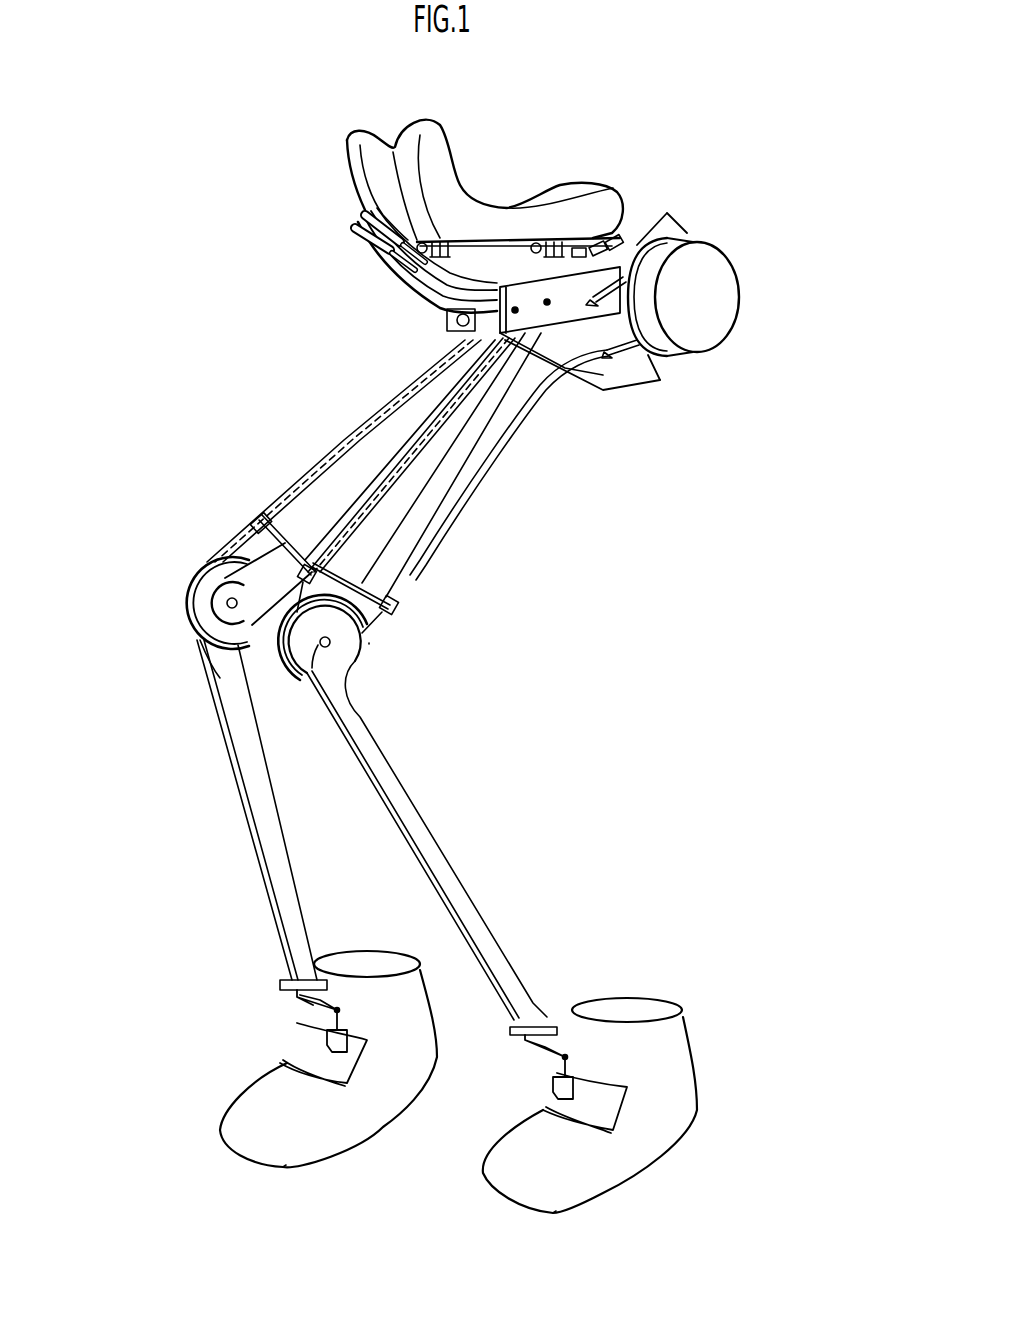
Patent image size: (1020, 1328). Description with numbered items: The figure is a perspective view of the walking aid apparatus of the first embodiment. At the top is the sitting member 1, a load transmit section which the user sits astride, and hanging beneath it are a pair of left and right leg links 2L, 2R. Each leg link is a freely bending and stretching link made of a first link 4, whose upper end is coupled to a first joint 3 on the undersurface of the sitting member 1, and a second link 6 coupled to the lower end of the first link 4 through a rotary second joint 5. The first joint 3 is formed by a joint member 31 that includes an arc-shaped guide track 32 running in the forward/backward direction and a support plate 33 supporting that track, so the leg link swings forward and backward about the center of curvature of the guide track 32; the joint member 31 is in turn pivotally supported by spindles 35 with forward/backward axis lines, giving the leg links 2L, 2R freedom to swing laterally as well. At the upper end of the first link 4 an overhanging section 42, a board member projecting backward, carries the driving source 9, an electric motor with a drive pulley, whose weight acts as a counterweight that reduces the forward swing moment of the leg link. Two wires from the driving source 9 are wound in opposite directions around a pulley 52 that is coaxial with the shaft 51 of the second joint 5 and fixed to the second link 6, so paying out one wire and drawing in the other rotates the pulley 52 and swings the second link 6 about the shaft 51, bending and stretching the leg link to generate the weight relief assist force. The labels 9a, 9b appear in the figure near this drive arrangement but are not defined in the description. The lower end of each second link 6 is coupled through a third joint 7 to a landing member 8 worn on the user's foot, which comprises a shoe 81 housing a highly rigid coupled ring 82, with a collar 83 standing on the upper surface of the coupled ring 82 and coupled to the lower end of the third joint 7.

The sitting member 1 is at (506, 183).
The right leg link 2R is at (156, 583).
The left leg link 2L is at (393, 670).
The first joint 3 is at (352, 224).
The joint member 31 is at (423, 274).
The guide track 32 is at (473, 324).
The support plate 33 is at (440, 282).
The spindles 35 is at (420, 240).
The first link 4 is at (360, 448).
The overhanging section 42 is at (603, 377).
The second joint 5 is at (196, 571).
The shaft 51 is at (314, 648).
The pulley 52 is at (272, 647).
The second link 6 is at (375, 766).
The third joint 7 is at (338, 1001).
The landing member 8 is at (350, 951).
The shoe 81 is at (343, 1141).
The coupled ring 82 is at (340, 1058).
The collar 83 is at (307, 1044).
The driving source 9 is at (727, 273).
The driven pulley 9a is at (363, 624).
The drive cable 9b is at (507, 393).